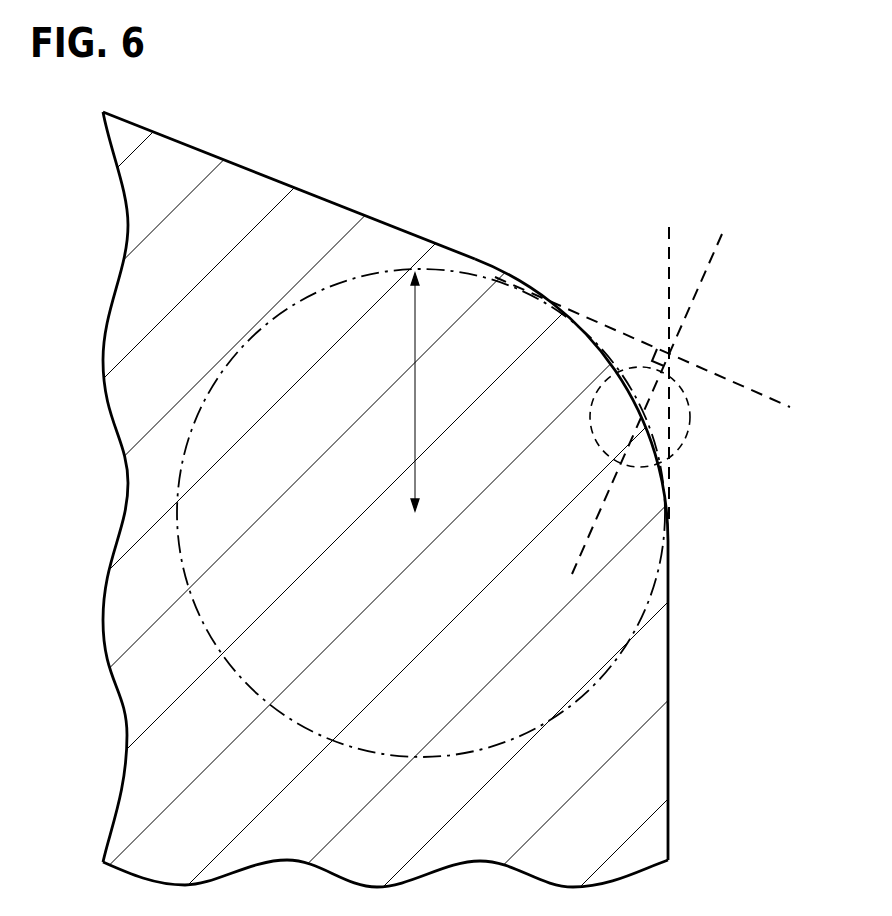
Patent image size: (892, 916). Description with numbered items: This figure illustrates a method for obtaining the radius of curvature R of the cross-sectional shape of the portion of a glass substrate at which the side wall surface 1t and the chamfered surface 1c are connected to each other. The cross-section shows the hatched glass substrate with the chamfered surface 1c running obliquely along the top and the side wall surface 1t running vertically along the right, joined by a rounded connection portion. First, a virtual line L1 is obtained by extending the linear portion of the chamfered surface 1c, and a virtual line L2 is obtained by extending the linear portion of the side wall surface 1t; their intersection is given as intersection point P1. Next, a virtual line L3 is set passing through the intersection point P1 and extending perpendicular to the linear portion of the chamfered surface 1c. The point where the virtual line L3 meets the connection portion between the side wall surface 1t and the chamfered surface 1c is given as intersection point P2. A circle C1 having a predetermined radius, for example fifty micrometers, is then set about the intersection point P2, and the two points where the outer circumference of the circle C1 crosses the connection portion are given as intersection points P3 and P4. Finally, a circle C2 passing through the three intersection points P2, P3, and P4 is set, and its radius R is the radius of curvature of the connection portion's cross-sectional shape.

The chamfered surface 1c is at (328, 198).
The side wall surface 1t is at (670, 660).
The circle C2 is at (397, 270).
The radius of curvature R is at (405, 392).
The circle C1 is at (687, 405).
The virtual line L1 is at (767, 393).
The virtual line L2 is at (665, 253).
The virtual line L3 is at (712, 260).
The intersection point P1 is at (667, 340).
The intersection point P2 is at (640, 415).
The intersection point P3 is at (615, 357).
The intersection point P4 is at (655, 462).